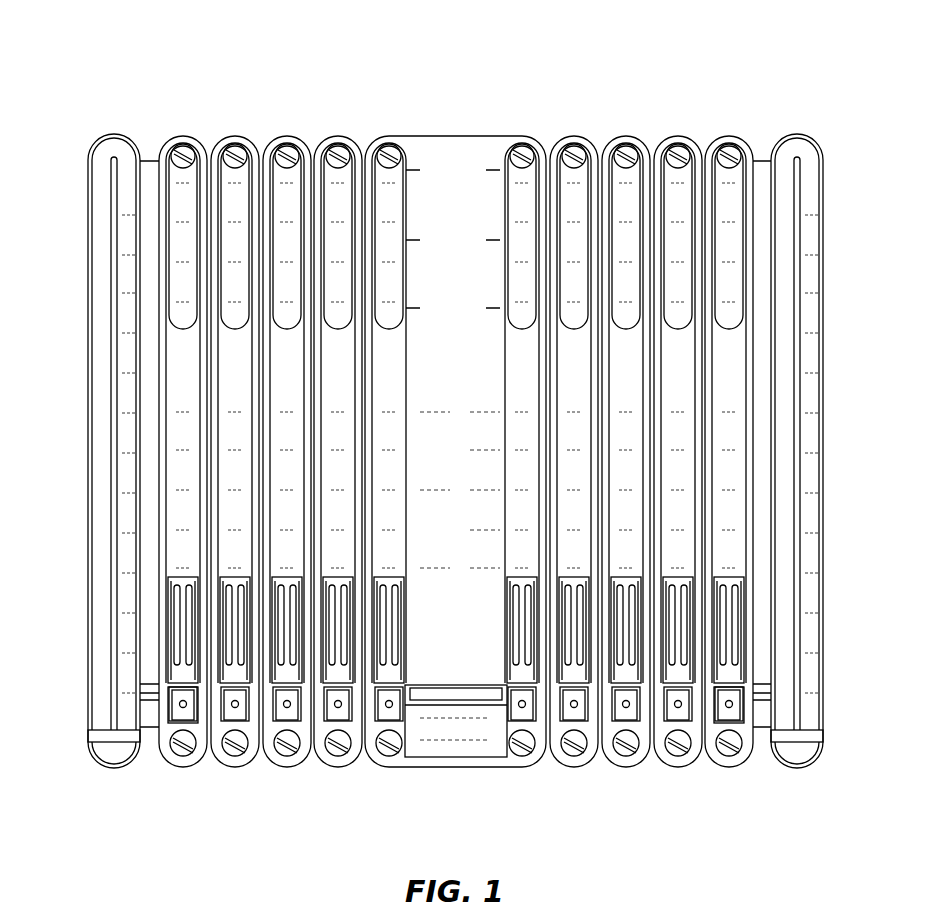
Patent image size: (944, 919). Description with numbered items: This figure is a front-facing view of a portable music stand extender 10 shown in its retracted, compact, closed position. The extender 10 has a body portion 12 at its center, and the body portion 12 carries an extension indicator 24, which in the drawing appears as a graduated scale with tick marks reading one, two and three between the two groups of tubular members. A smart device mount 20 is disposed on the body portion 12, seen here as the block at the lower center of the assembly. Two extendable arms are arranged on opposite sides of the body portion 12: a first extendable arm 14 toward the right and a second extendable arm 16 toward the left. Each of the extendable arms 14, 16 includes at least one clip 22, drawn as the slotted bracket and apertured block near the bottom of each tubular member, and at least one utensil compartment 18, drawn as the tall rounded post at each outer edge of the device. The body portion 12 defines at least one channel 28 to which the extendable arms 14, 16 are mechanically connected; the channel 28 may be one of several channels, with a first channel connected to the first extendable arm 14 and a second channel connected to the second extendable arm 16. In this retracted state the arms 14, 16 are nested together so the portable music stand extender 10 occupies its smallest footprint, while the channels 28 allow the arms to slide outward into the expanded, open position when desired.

The portable music stand extender 10 is at (806, 36).
The body portion 12 is at (467, 150).
The first extendable arm 14 is at (735, 142).
The second extendable arm 16 is at (180, 150).
The utensil compartment 18 is at (103, 352).
The smart device mount 20 is at (464, 742).
The clip 22 is at (153, 712).
The extension indicator 24 is at (504, 238).
The channel 28 is at (377, 210).